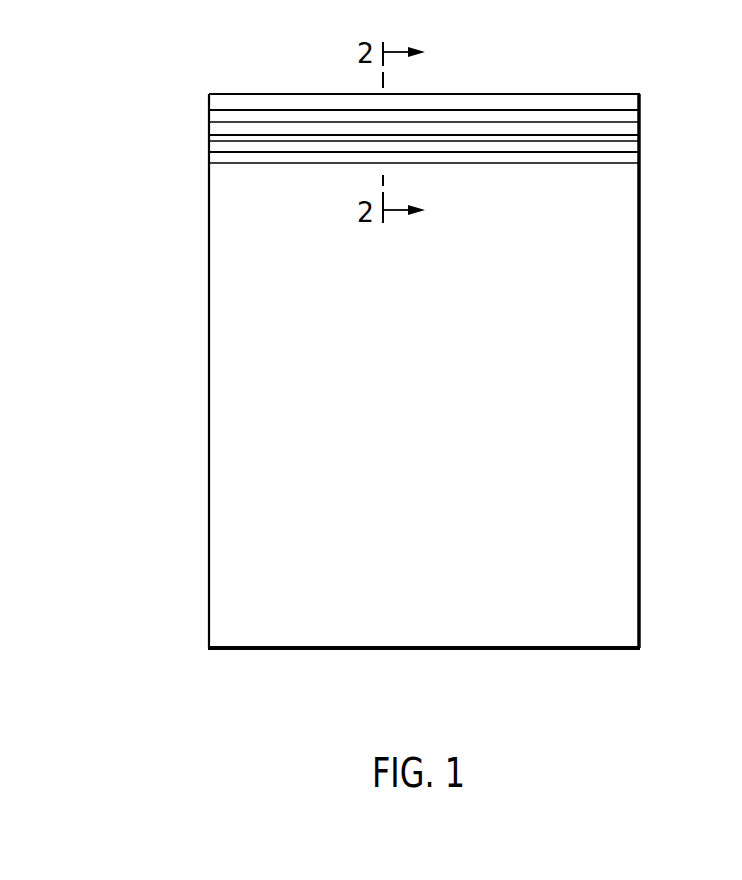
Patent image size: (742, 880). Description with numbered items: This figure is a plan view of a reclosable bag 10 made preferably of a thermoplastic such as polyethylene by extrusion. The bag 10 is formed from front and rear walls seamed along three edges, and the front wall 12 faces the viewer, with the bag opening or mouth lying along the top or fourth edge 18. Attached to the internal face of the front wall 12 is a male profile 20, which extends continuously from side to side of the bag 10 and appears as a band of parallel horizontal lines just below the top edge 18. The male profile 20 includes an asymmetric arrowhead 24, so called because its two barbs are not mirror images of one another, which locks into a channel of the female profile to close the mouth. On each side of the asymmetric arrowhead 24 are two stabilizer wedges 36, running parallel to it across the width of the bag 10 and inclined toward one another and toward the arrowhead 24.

The reclosable bag 10 is at (216, 80).
The front wall 12 is at (588, 558).
The top edge 18 is at (597, 94).
The male profile 20 is at (508, 128).
The asymmetric arrowhead 24 is at (637, 137).
The stabilizer wedges 36 is at (220, 117).